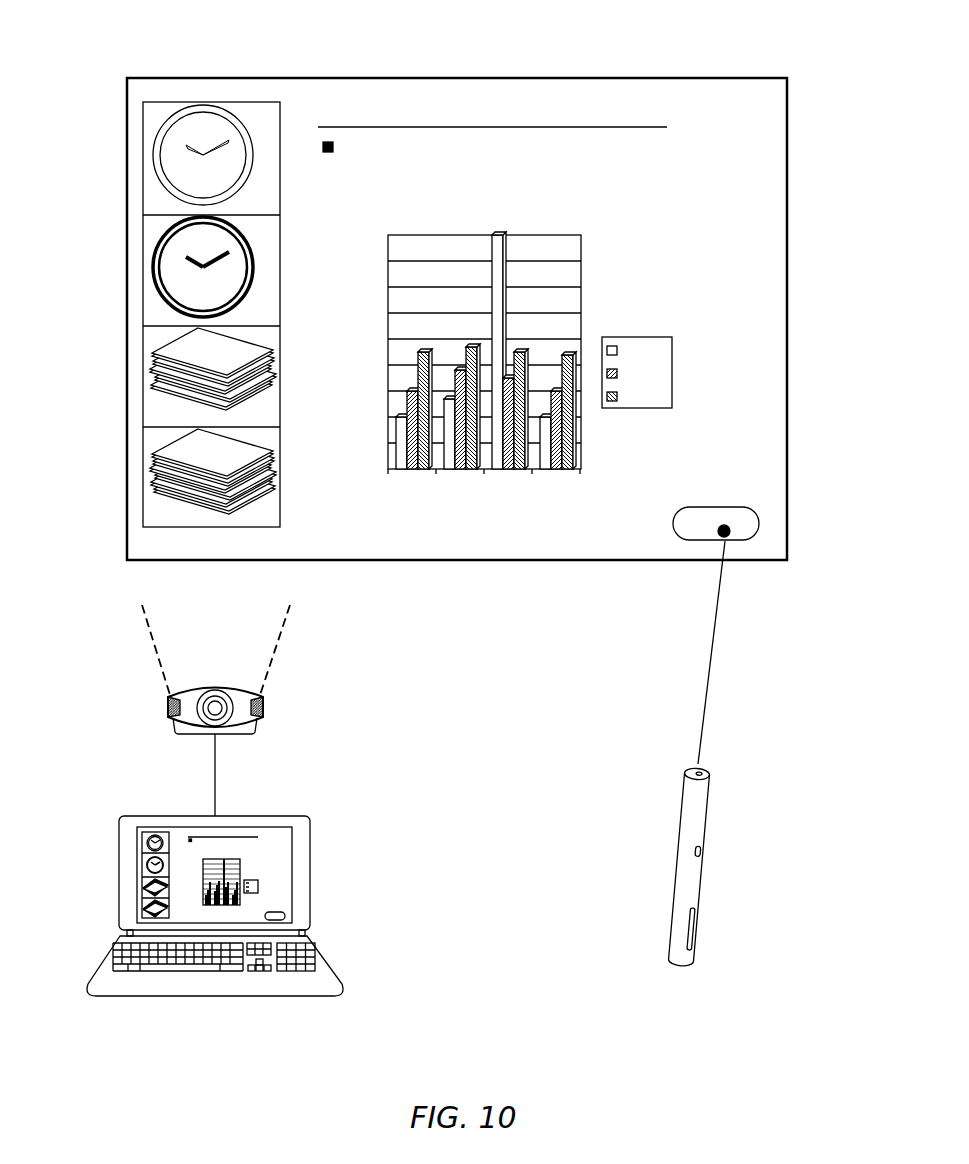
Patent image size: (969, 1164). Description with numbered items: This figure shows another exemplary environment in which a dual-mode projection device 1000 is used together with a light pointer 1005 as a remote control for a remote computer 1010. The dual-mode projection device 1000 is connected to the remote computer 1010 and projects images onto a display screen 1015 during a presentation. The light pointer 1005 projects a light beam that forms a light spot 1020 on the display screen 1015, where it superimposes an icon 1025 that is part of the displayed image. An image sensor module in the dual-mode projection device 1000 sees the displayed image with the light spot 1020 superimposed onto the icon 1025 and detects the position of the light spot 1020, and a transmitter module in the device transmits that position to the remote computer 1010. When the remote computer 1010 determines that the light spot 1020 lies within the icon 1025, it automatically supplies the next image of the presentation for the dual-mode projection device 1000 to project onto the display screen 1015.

The dual-mode projection device 1000 is at (183, 710).
The light pointer 1005 is at (640, 858).
The remote computer 1010 is at (185, 906).
The display screen 1015 is at (471, 289).
The light spot 1020 is at (791, 489).
The icon 1025 is at (682, 494).